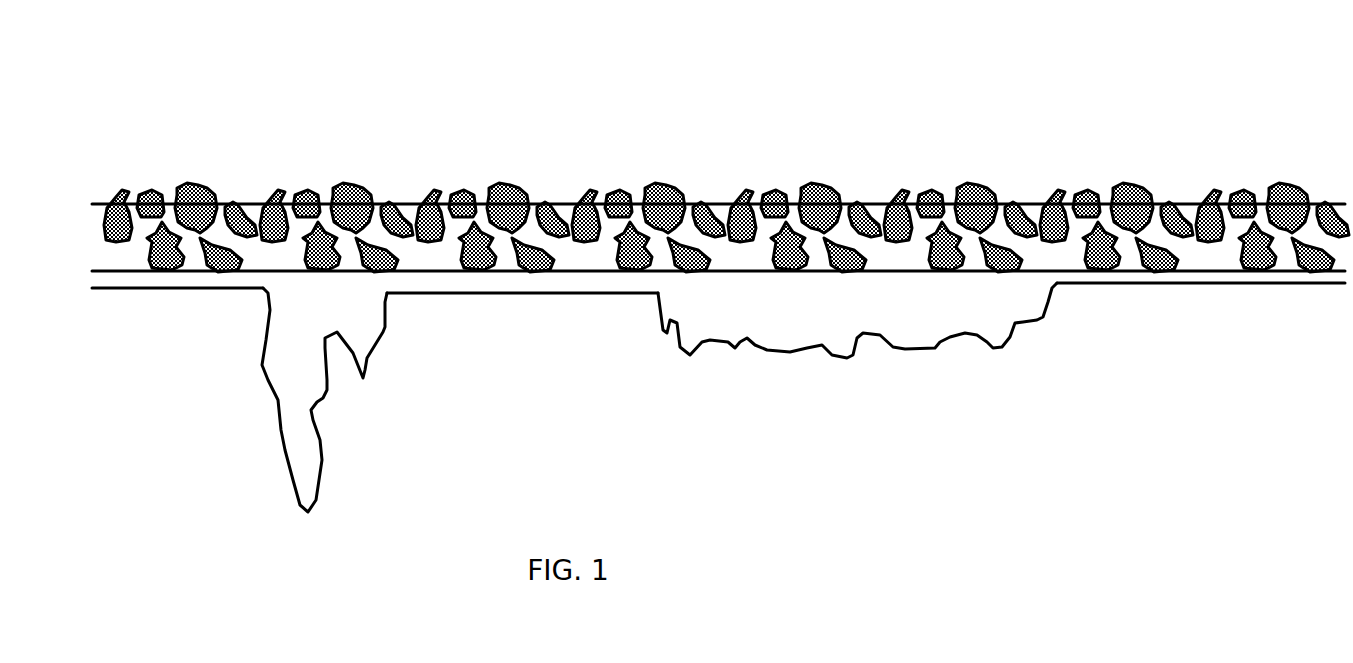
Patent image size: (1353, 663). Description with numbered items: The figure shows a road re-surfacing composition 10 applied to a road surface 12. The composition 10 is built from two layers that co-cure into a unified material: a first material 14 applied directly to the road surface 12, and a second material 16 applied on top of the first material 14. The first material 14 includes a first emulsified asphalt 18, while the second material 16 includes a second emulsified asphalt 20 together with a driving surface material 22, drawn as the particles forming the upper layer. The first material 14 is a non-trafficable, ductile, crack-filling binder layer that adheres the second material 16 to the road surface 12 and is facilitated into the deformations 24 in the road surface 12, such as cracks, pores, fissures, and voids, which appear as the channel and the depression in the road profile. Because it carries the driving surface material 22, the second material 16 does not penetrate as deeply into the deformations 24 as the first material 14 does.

The road re-surfacing composition 10 is at (203, 108).
The road surface 12 is at (218, 289).
The first material 14 is at (118, 286).
The second material 16 is at (76, 248).
The first emulsified asphalt 18 is at (427, 283).
The second emulsified asphalt 20 is at (582, 253).
The driving surface material 22 is at (358, 187).
The deformations 24 is at (330, 395).